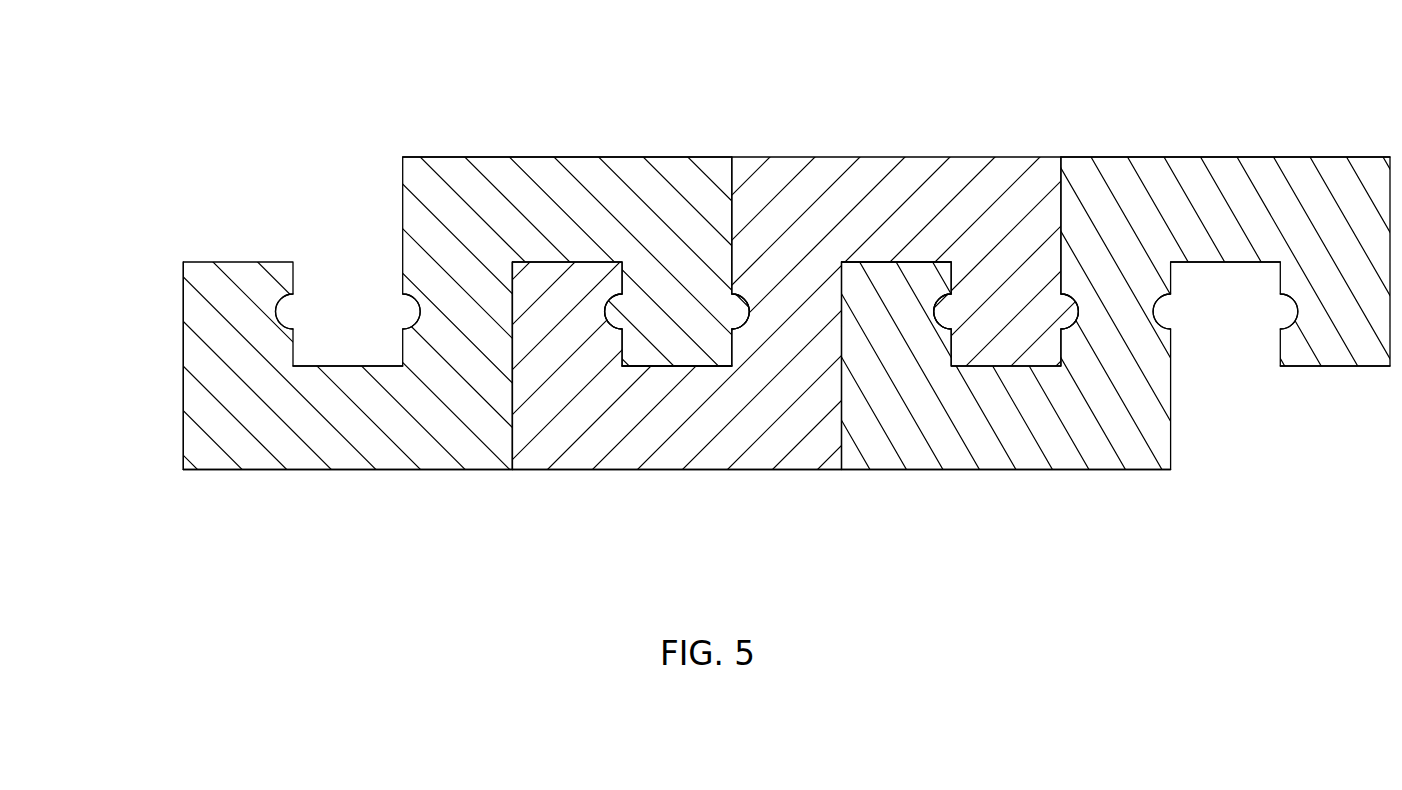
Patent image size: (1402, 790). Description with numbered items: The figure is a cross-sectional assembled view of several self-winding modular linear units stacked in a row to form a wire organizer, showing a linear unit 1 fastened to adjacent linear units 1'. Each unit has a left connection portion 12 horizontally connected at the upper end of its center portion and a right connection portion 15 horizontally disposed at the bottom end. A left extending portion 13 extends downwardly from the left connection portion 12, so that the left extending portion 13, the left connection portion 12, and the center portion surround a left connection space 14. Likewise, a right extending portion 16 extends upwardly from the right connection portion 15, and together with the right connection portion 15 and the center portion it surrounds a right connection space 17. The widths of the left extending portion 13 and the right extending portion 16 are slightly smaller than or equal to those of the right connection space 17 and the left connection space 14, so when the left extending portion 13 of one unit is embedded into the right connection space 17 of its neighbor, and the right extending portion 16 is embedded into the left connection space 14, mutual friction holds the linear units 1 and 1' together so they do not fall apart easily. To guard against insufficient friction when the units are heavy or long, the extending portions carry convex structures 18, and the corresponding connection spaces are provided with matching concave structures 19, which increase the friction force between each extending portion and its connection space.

The linear unit 1 is at (525, 250).
The linear unit 1' is at (792, 258).
The left connection portion 12 is at (896, 122).
The left extending portion 13 is at (1004, 212).
The left connection space 14 is at (1061, 396).
The right connection portion 15 is at (676, 516).
The right extending portion 16 is at (335, 397).
The right connection space 17 is at (500, 309).
The convex structure 18 is at (828, 414).
The concave structure 19 is at (777, 307).